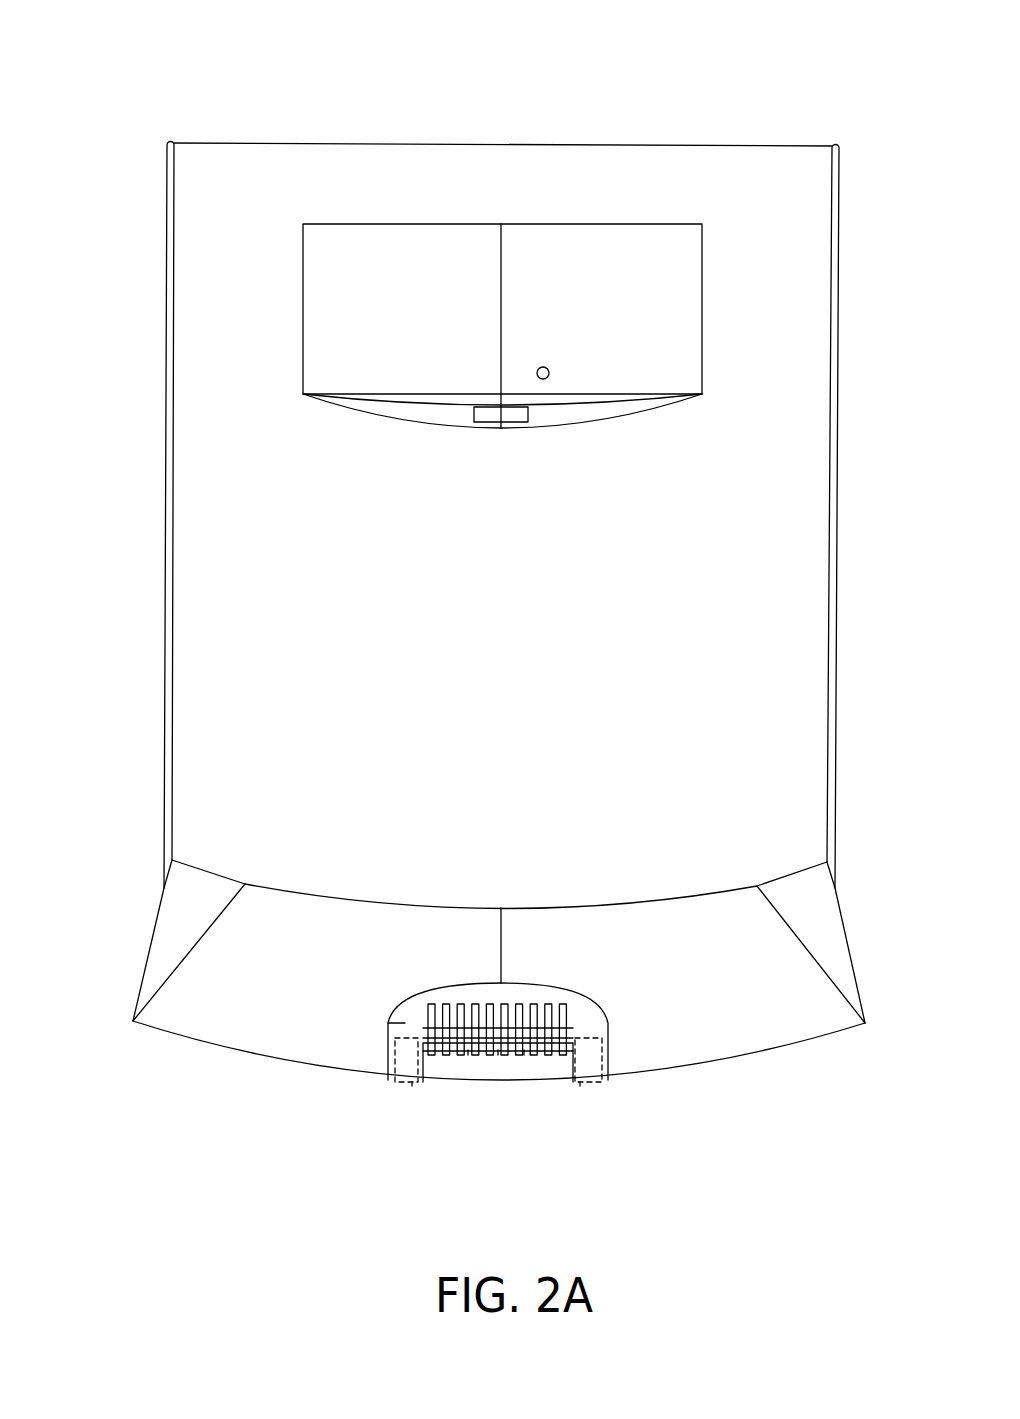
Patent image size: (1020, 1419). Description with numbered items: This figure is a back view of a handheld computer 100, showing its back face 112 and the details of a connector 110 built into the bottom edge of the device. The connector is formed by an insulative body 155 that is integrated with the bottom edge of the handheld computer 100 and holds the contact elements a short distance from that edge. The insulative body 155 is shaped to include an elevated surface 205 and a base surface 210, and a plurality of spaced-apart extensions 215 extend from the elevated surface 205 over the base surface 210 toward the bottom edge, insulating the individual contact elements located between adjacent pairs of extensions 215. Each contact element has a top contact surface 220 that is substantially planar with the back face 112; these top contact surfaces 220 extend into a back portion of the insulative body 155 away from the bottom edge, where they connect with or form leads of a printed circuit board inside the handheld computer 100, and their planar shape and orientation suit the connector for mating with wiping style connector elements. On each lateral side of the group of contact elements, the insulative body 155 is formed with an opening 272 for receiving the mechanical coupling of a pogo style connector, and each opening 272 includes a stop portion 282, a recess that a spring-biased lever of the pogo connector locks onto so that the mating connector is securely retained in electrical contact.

The handheld computer 100 is at (750, 112).
The back face 112 is at (242, 447).
The connector 110 is at (443, 1110).
The insulative body 155 is at (392, 1023).
The elevated surface 205 is at (557, 997).
The top contact surface 220 is at (533, 1007).
The extensions 215 is at (524, 1056).
The base surface 210 is at (544, 1083).
The stop portion 282 is at (388, 1045).
The opening 272 is at (412, 1084).